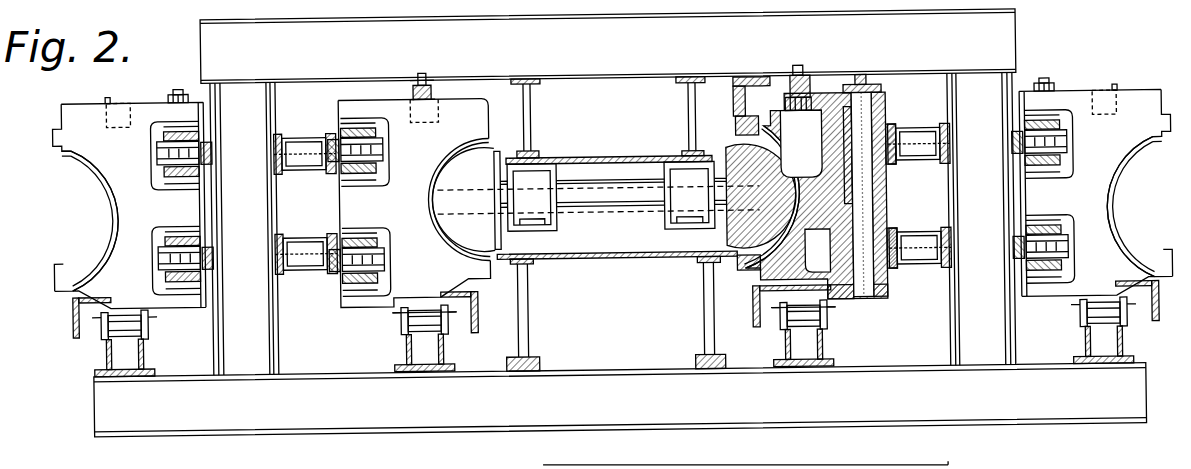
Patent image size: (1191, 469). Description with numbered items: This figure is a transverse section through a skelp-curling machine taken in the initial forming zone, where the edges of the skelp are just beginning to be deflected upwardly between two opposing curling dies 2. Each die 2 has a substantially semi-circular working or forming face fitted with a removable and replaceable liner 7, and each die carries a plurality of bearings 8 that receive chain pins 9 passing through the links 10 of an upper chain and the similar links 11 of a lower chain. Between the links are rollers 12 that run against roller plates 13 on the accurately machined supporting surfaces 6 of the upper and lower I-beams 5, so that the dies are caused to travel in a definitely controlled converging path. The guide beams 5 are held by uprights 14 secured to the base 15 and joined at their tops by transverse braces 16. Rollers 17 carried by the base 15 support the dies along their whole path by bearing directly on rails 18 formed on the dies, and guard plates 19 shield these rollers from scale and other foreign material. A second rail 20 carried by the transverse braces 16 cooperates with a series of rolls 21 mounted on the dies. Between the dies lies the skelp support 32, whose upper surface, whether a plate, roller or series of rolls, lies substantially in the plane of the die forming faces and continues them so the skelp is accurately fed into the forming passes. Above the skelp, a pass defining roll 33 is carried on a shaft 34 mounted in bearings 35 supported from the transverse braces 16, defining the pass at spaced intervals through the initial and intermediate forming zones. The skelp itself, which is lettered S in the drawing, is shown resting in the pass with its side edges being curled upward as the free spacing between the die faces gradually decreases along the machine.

The die 2 is at (130, 216).
The I-beam 5 is at (278, 175).
The supporting surface 6 is at (890, 122).
The liner 7 is at (88, 160).
The bearing 8 is at (348, 103).
The chain pin 9 is at (873, 186).
The link 10 is at (312, 78).
The link 11 is at (394, 266).
The roller 12 is at (360, 151).
The roller plate 13 is at (303, 226).
The upright 14 is at (225, 328).
The base 15 is at (265, 421).
The transverse brace 16 is at (210, 37).
The roller 17 is at (123, 329).
The rail 18 is at (432, 305).
The guard plate 19 is at (72, 312).
The second rail 20 is at (412, 85).
The roll 21 is at (120, 88).
The skelp support 32 is at (638, 262).
The pass defining roll 33 is at (455, 195).
The shaft 34 is at (607, 211).
The bearing 35 is at (525, 186).
The spring S is at (560, 256).